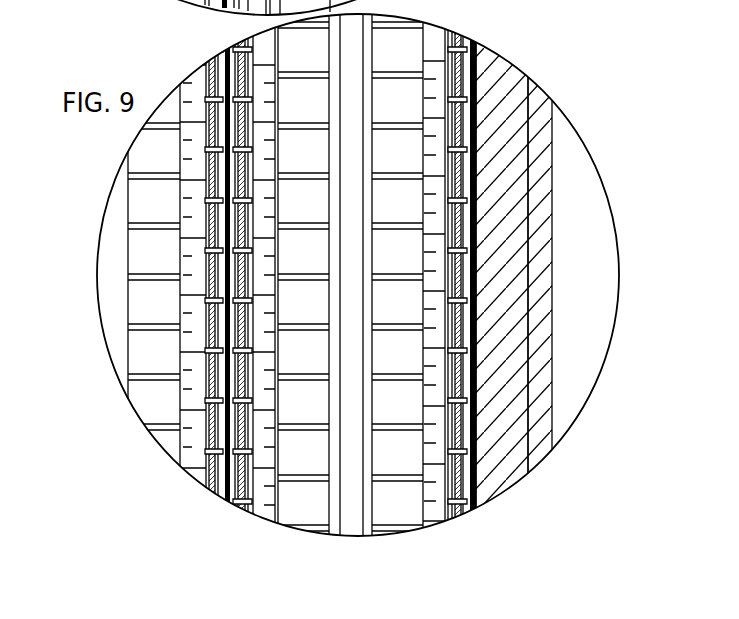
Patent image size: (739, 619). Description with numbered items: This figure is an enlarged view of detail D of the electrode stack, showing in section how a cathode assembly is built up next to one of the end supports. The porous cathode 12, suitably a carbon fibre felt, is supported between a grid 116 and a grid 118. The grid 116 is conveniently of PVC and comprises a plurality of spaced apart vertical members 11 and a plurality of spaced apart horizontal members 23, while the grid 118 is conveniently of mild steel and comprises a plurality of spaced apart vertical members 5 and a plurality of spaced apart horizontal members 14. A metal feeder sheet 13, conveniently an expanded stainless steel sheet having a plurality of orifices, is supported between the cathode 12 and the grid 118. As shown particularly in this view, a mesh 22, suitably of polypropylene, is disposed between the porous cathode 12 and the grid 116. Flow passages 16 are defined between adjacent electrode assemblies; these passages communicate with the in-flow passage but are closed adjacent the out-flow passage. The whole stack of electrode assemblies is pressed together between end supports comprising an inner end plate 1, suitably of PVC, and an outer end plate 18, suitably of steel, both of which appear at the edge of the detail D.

The detail D is at (108, 214).
The inner end plate 1 is at (520, 376).
The vertical members 5 is at (477, 250).
The vertical members 11 is at (476, 180).
The porous cathode 12 is at (477, 225).
The metal feeder sheet 13 is at (440, 490).
The horizontal members 14 is at (478, 183).
The flow passages 16 is at (347, 50).
The outer end plate 18 is at (544, 414).
The mesh 22 is at (477, 276).
The horizontal members 23 is at (552, 292).
The grid 116 is at (247, 516).
The grid 118 is at (338, 538).